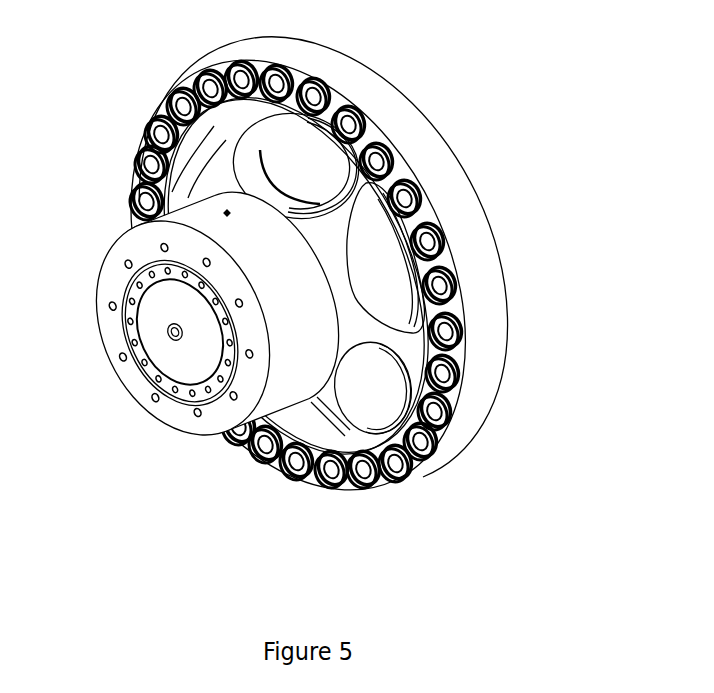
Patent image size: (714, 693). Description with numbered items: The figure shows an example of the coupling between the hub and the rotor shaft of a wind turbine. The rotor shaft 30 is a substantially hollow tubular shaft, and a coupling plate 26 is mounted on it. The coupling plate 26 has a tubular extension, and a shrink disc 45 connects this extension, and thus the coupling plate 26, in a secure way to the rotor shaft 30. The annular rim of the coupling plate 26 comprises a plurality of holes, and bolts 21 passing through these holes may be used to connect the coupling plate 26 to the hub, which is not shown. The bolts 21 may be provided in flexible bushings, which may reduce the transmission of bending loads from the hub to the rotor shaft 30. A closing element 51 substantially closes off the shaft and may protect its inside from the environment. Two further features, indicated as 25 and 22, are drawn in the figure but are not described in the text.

The rotor shaft 30 is at (497, 247).
The coupling plate 26 is at (243, 163).
The closing element 51 is at (197, 360).
The shrink disc 45 is at (240, 398).
The opening in spoke plate 25 is at (355, 413).
The bolts 21 is at (397, 473).
The bearing ring 22 is at (298, 305).